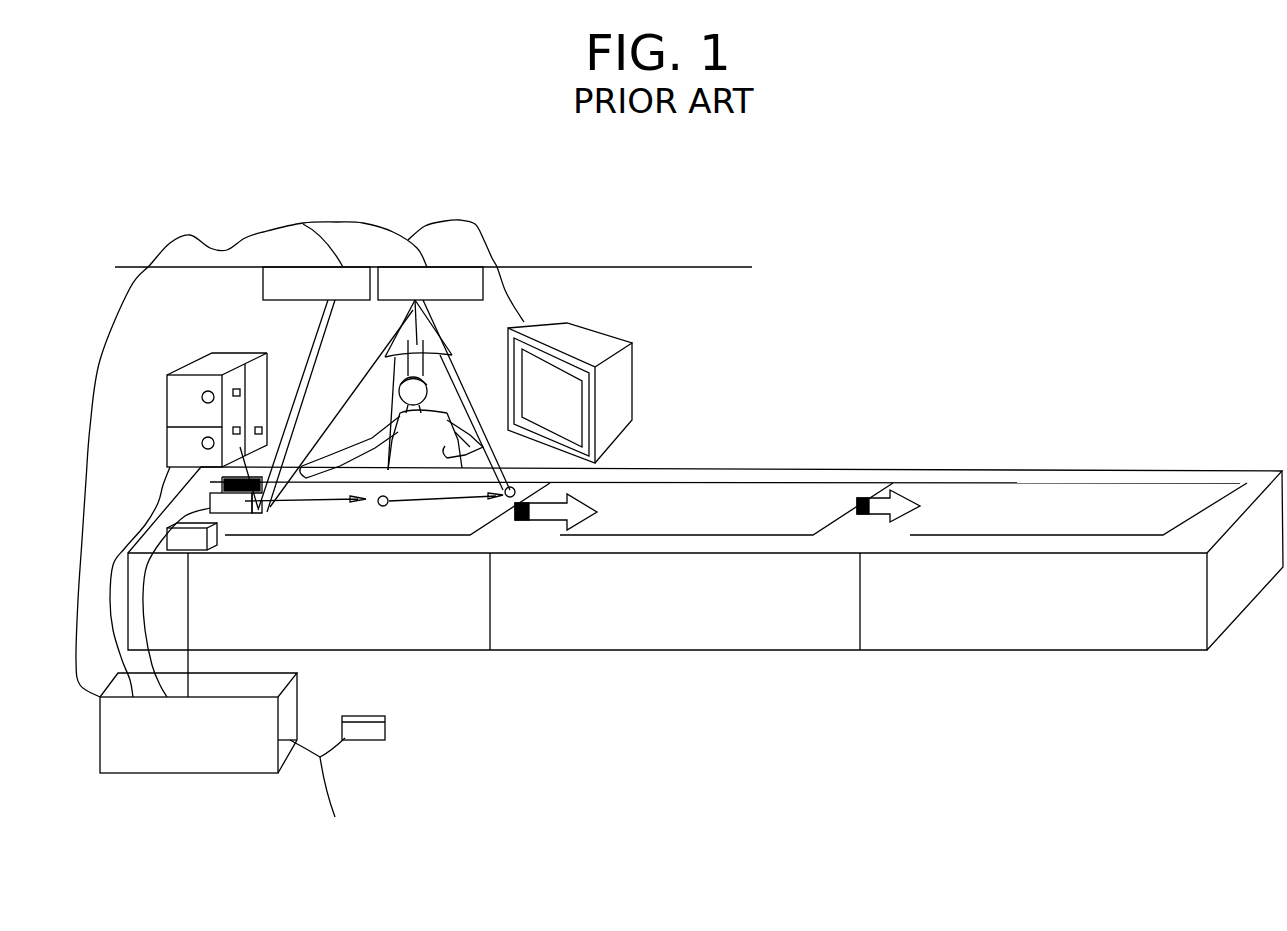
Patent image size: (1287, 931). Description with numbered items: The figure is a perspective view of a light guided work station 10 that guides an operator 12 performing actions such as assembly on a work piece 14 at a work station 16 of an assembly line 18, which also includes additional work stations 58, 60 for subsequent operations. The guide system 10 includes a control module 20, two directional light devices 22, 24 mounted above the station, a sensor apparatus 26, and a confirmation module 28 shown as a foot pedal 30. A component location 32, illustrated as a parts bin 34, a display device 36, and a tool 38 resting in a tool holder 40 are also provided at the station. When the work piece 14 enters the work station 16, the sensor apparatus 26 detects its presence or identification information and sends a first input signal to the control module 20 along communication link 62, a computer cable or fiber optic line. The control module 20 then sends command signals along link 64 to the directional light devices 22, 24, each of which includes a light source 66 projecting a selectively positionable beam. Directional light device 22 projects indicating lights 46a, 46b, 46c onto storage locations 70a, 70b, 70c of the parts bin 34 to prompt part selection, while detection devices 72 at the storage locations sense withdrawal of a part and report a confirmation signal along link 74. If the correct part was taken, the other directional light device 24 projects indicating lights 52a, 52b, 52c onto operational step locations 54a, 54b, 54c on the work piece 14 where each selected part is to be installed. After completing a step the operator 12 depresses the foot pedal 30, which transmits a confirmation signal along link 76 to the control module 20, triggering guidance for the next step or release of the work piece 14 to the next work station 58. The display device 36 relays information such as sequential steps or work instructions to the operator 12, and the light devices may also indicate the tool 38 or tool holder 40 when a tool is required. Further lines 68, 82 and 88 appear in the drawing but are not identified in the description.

The light guided work station 10 is at (246, 168).
The operator 12 is at (453, 364).
The work piece 14 is at (460, 530).
The work station 16 is at (330, 640).
The assembly line 18 is at (830, 655).
The control module 20 is at (200, 753).
The directional light device 22 is at (283, 283).
The directional light device 24 is at (463, 287).
The sensor apparatus 26 is at (205, 555).
The confirmation module 28 is at (370, 745).
The foot pedal 30 is at (385, 728).
The component location 32 is at (195, 363).
The parts bin 34 is at (170, 388).
The display device 36 is at (628, 398).
The tool 38 is at (266, 476).
The tool holder 40 is at (258, 540).
The indicating light 46a is at (290, 347).
The indicating light 46b is at (300, 360).
The indicating light 46c is at (288, 387).
The indicating light 52a is at (327, 433).
The indicating light 52b is at (424, 322).
The indicating light 52c is at (484, 416).
The operational step location 54a is at (308, 535).
The operational step location 54b is at (384, 506).
The operational step location 54c is at (506, 497).
The work station 58 is at (757, 642).
The work station 60 is at (1117, 640).
The communication link 62 is at (195, 668).
The link 64 is at (103, 358).
The light source 66 is at (397, 310).
The ceiling 68 is at (724, 267).
The storage location 70a is at (222, 372).
The storage location 70b is at (200, 445).
The storage location 70c is at (264, 432).
The detection device 72 is at (201, 398).
The link 74 is at (158, 502).
The link 76 is at (321, 787).
The cable 82 is at (150, 620).
The enclosure hump 88 is at (483, 236).